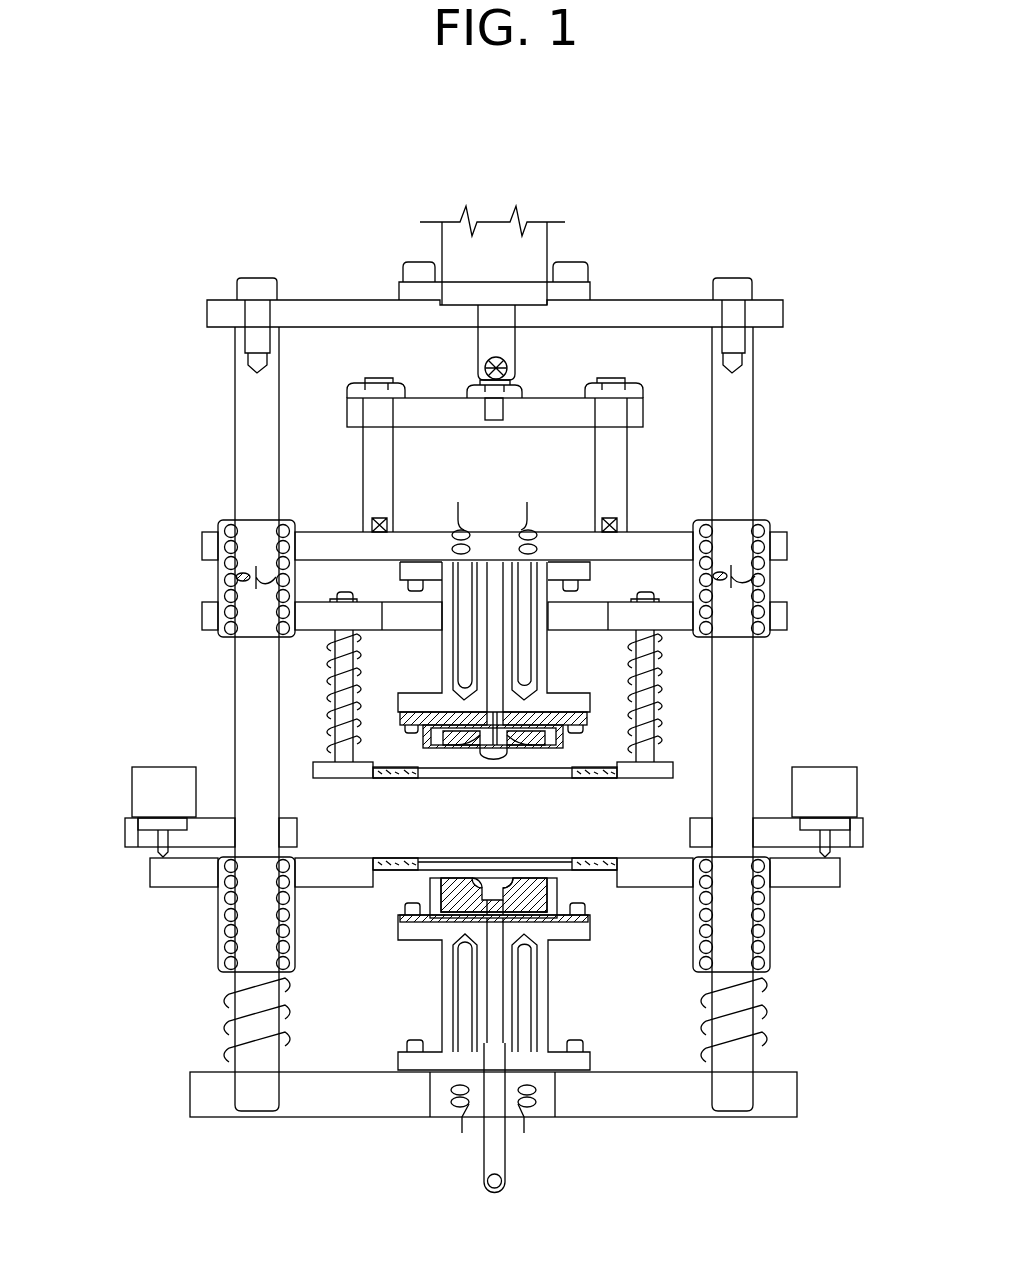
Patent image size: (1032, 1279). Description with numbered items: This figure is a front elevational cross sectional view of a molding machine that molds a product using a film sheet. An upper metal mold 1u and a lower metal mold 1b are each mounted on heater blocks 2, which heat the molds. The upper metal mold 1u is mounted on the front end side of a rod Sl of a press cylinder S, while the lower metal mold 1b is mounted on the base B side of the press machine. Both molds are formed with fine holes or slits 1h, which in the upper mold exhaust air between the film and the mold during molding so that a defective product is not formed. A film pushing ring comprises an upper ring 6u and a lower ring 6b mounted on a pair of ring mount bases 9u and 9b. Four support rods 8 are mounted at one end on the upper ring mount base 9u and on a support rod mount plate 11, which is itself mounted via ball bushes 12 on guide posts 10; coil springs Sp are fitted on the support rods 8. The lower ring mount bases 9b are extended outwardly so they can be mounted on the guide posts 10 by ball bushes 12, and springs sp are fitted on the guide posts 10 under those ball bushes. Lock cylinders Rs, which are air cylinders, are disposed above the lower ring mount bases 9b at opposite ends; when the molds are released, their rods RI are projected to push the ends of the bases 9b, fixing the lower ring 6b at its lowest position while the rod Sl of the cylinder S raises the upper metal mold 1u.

The press cylinder S is at (548, 243).
The rod of the press cylinder Sl is at (515, 338).
The guide posts 10 is at (247, 458).
The ball bushes 12 is at (773, 522).
The support rod mount plate 11 is at (790, 607).
The support rods 8 is at (645, 703).
The coil springs Sp is at (655, 733).
The heater blocks 2 is at (548, 663).
The fine holes or slits 1h is at (437, 705).
The upper metal mold 1u is at (520, 742).
The lower metal mold 1b is at (452, 878).
The upper ring mount base 9u is at (313, 768).
The upper ring 6u is at (405, 778).
The lower ring mount bases 9b is at (655, 858).
The lower ring 6b is at (568, 860).
The lock cylinders Rs is at (140, 797).
The rods of the lock cylinders RI is at (158, 850).
The springs sp is at (235, 985).
The base B is at (797, 1090).